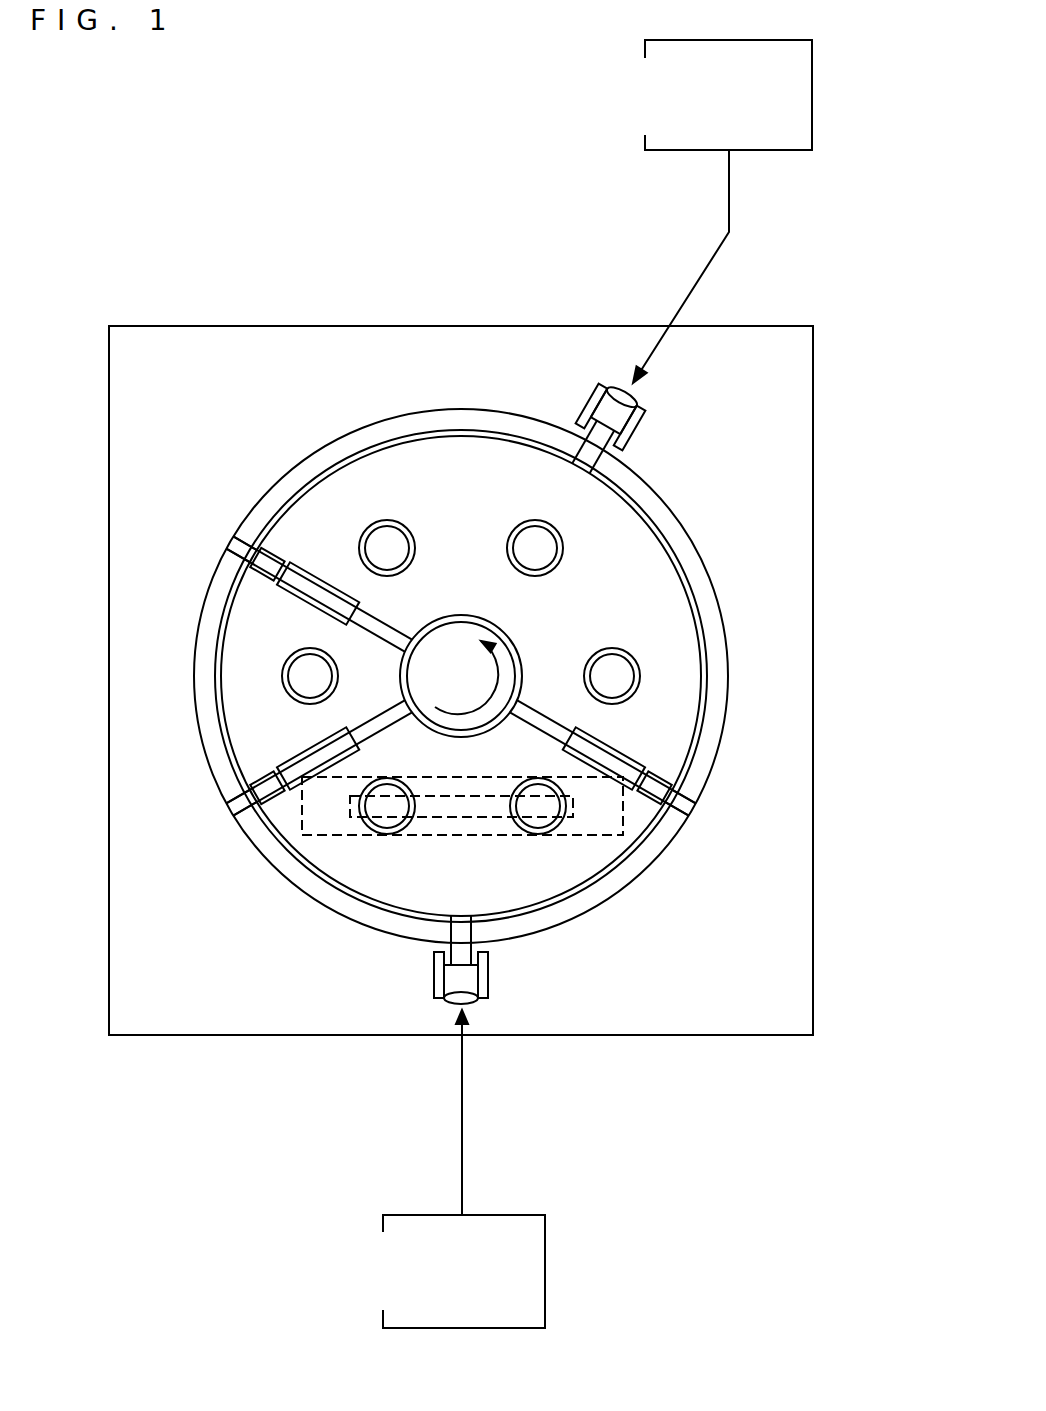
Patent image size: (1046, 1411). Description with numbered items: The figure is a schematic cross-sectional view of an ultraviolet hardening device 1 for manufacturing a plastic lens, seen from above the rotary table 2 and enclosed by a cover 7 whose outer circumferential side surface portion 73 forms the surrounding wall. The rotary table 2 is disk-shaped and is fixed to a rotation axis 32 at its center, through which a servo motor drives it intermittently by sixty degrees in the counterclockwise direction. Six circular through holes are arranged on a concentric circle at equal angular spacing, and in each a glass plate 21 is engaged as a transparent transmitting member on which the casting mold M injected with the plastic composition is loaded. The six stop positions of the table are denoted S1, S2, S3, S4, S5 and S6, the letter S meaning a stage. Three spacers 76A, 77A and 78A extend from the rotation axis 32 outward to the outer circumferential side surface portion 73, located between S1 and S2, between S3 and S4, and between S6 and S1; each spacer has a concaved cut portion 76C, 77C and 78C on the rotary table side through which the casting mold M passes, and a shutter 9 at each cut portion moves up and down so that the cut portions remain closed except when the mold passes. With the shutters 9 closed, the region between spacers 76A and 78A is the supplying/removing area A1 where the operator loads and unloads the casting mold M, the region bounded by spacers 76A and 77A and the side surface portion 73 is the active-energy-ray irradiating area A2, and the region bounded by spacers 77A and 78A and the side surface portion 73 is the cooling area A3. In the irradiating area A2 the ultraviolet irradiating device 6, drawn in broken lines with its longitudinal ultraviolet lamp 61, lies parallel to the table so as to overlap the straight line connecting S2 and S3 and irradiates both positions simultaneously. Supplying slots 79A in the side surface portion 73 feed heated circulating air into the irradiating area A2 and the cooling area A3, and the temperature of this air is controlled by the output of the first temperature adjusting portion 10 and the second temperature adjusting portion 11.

The ultraviolet hardening device 1 is at (850, 268).
The rotary table 2 is at (683, 572).
The cover 7 is at (720, 730).
The outer circumferential side surface portion 73 is at (717, 620).
The shutter 9 is at (243, 566).
The rotation axis 32 is at (510, 638).
The spacer 78A is at (264, 562).
The concaved cut portion 78C is at (312, 598).
The spacer 76A is at (262, 798).
The concaved cut portion 76C is at (326, 778).
The spacer 77A is at (660, 796).
The concaved cut portion 77C is at (618, 760).
The supplying slot 79A is at (610, 395).
The stop position S1 is at (270, 680).
The stop position S2 is at (387, 846).
The stop position S3 is at (538, 846).
The stop position S4 is at (660, 676).
The stop position S5 is at (535, 505).
The stop position S6 is at (387, 505).
The casting mold M is at (300, 654).
The glass plate 21 is at (290, 668).
The supplying/removing area A1 is at (238, 731).
The active-energy-ray irradiating area A2 is at (337, 864).
The cooling area A3 is at (459, 464).
The ultraviolet lamp 61 is at (578, 836).
The ultraviolet irradiating device 6 is at (605, 817).
The first temperature adjusting portion 10 is at (545, 1273).
The second temperature adjusting portion 11 is at (812, 93).